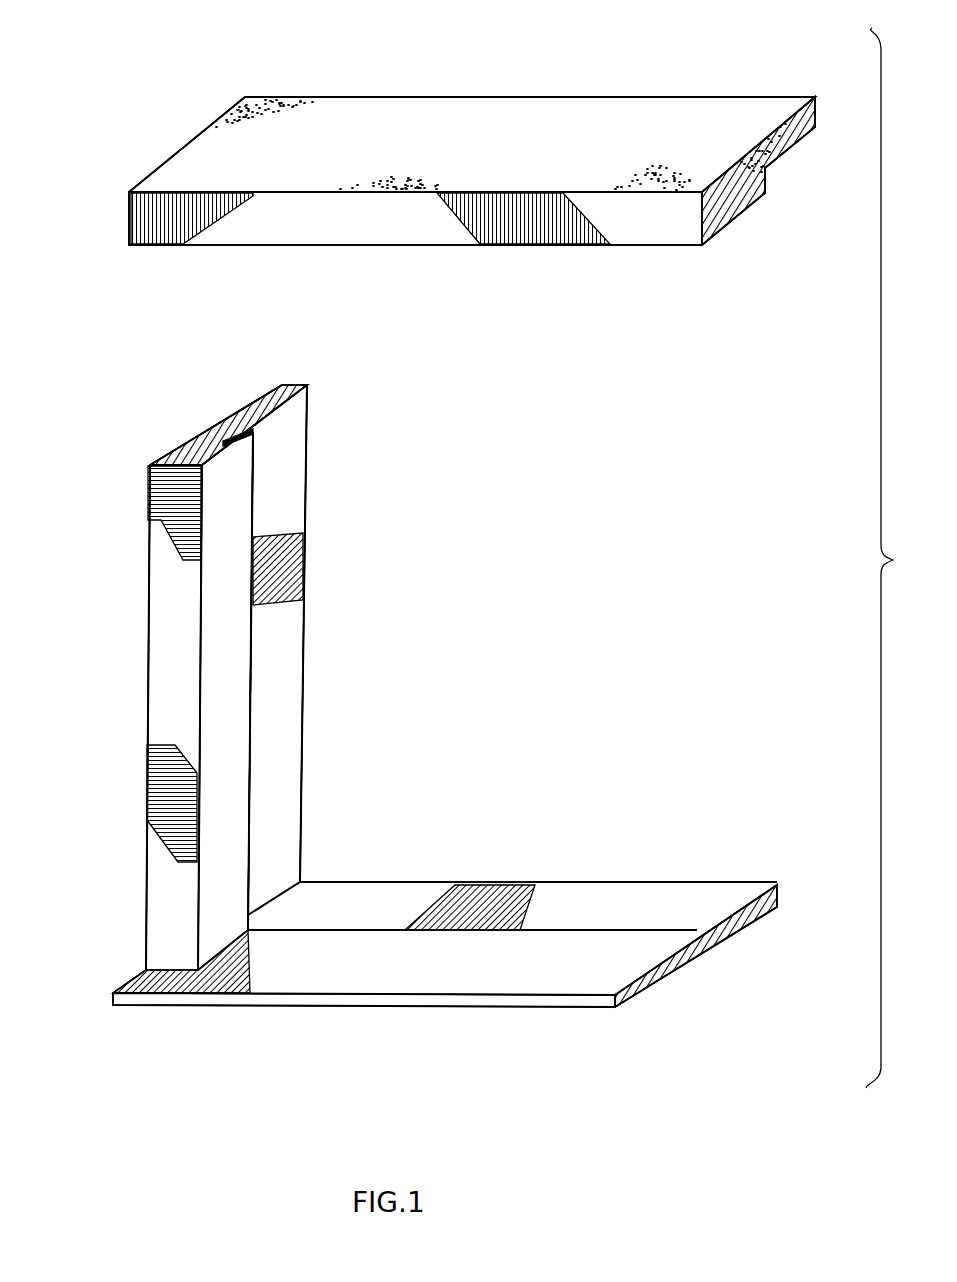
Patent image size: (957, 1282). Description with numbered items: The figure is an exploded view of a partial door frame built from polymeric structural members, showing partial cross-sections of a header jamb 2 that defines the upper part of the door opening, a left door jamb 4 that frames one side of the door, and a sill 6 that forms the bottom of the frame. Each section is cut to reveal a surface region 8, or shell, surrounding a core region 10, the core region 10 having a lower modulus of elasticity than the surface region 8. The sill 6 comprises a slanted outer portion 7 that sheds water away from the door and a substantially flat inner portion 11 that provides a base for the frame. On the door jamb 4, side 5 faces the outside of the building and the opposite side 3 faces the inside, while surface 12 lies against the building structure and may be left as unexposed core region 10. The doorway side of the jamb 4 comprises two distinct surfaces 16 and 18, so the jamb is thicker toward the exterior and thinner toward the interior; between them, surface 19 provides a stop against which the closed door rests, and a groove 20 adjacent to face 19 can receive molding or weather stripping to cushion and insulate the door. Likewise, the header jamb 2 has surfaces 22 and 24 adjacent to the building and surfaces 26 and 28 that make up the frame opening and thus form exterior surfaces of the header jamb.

The header jamb 2 is at (103, 128).
The surface of header jamb adjacent to the building 24 is at (158, 150).
The core region 10 is at (400, 140).
The surface of header jamb adjacent to the building 22 is at (600, 117).
The surface region 8 is at (792, 140).
The surface of header jamb forming the frame opening 26 is at (493, 220).
The surface of header jamb forming the frame opening 28 is at (658, 258).
The surface of door jamb adjacent to the building structure 12 is at (138, 445).
The opposite side of door jamb 3 is at (300, 383).
The groove 20 is at (255, 430).
The left door jamb 4 is at (98, 526).
The surface of door jamb forming the door opening 16 is at (275, 632).
The stop surface 19 is at (264, 688).
The surface of door jamb forming the door opening 18 is at (235, 737).
The side of door jamb 5 is at (162, 705).
The sill 6 is at (386, 1044).
The inner portion of sill 11 is at (630, 905).
The outer portion of sill 7 is at (590, 968).